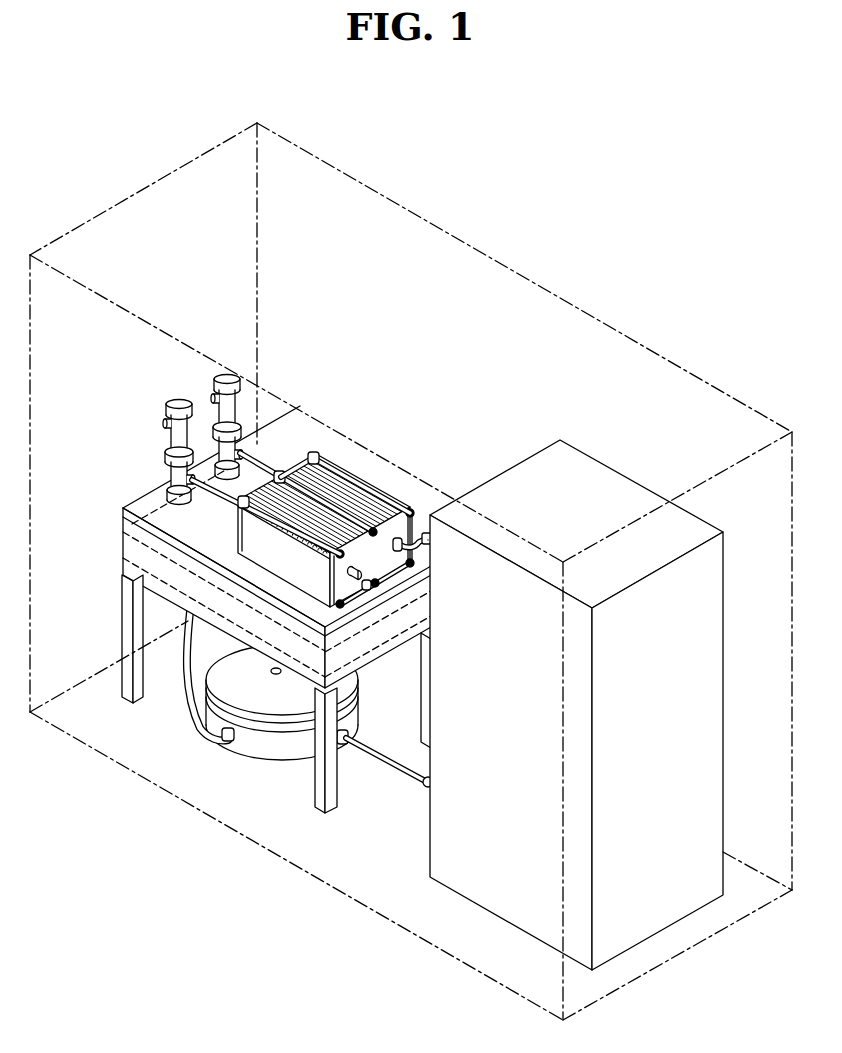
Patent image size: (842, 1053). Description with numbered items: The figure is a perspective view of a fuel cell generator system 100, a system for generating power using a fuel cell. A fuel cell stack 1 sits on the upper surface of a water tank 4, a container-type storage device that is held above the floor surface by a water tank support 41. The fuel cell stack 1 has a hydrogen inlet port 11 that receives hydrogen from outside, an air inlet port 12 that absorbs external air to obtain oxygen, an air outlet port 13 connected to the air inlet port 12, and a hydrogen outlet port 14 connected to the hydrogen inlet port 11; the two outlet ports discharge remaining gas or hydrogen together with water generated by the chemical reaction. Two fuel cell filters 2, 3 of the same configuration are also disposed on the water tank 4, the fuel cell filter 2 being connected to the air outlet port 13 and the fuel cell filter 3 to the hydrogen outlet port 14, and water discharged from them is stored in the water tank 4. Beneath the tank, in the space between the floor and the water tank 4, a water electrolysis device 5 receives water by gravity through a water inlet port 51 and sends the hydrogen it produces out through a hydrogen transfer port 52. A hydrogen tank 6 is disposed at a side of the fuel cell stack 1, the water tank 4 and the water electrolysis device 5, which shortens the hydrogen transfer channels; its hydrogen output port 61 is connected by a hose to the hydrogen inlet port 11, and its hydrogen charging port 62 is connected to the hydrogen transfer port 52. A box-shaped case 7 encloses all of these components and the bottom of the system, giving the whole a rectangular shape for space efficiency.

The fuel cell generator system 100 is at (468, 113).
The fuel cell stack 1 is at (362, 484).
The hydrogen inlet port 11 is at (401, 540).
The air inlet port 12 is at (360, 582).
The air outlet port 13 is at (236, 521).
The hydrogen outlet port 14 is at (293, 474).
The fuel cell filter 2 is at (167, 401).
The fuel cell filter 3 is at (231, 377).
The water tank 4 is at (112, 503).
The water tank support 41 is at (124, 642).
The water electrolysis device 5 is at (278, 762).
The water inlet port 51 is at (229, 743).
The hydrogen transfer port 52 is at (344, 745).
The hydrogen tank 6 is at (628, 472).
The hydrogen output port 61 is at (431, 537).
The hydrogen charging port 62 is at (424, 789).
The case 7 is at (598, 321).